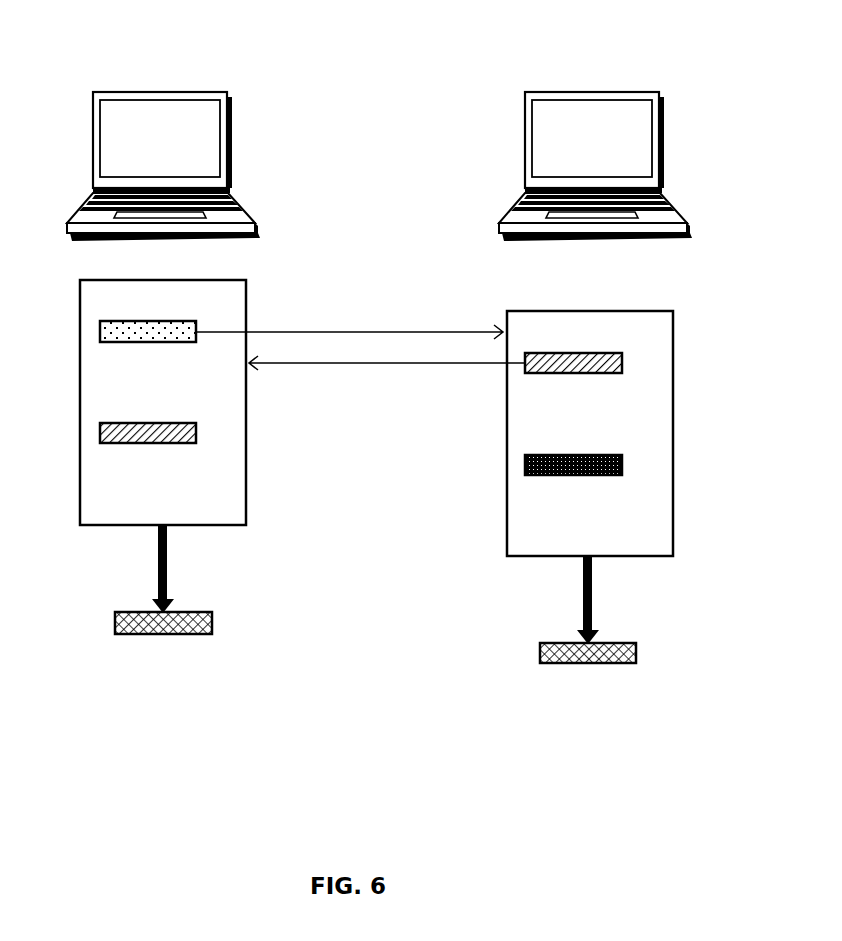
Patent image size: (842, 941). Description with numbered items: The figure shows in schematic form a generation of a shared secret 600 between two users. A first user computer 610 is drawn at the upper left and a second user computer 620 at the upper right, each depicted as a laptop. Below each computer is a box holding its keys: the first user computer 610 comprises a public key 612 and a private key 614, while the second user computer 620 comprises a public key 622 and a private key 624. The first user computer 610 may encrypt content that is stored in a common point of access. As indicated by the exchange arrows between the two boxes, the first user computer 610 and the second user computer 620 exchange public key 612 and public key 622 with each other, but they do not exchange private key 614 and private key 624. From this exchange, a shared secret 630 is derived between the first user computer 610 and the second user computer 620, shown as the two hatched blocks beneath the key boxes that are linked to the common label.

The generation of a shared secret 600 is at (344, 149).
The first user computer 610 is at (243, 240).
The second user computer 620 is at (662, 238).
The public key 612 is at (132, 352).
The private key 614 is at (141, 452).
The public key 622 is at (557, 384).
The private key 624 is at (567, 484).
The shared secret 630 is at (200, 636).